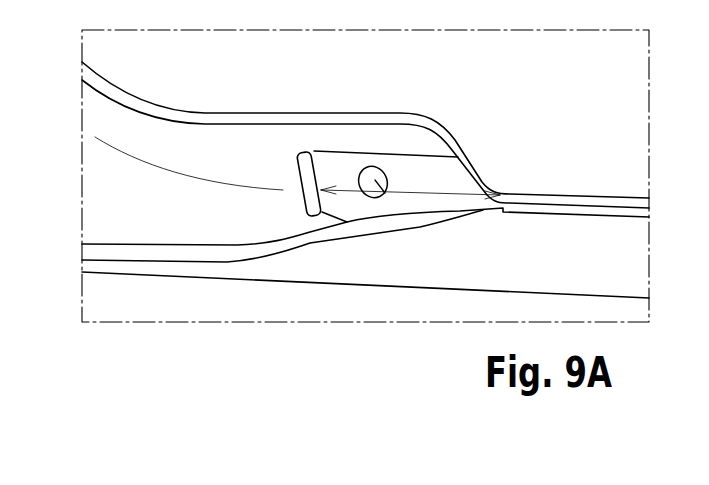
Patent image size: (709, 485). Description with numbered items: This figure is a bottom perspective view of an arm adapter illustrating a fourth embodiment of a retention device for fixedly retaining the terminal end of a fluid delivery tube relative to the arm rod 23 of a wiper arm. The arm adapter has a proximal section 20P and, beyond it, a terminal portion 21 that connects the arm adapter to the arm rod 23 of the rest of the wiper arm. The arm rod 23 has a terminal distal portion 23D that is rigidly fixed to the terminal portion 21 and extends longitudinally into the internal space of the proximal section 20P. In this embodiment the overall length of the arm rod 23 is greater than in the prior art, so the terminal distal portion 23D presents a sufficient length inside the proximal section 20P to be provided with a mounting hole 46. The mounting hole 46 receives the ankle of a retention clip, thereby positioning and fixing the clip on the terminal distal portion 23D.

The terminal portion 21 is at (602, 253).
The proximal section 20P is at (265, 268).
The arm rod 23 is at (402, 128).
The terminal distal portion 23D is at (338, 167).
The mounting hole 46 is at (387, 197).